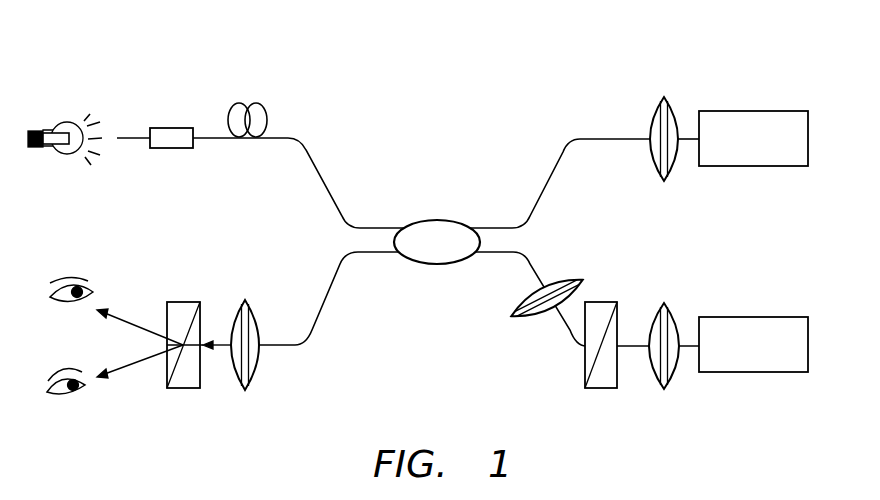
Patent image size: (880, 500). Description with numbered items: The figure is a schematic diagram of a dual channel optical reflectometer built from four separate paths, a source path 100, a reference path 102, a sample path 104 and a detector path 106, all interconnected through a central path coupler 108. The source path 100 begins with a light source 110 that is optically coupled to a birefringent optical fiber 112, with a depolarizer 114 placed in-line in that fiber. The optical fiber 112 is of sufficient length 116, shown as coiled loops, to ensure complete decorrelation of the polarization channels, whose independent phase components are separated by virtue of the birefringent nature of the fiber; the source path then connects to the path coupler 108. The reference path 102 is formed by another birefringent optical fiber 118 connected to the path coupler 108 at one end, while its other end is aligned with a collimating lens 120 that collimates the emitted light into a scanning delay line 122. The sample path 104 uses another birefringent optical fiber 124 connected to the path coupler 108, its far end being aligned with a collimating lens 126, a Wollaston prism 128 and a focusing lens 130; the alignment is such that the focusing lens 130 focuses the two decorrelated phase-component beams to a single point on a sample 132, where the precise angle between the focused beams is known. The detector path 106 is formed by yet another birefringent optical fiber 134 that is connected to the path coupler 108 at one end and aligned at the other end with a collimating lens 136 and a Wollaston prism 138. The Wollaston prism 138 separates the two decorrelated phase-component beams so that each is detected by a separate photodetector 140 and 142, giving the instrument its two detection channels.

The source path 100 is at (196, 66).
The reference path 102 is at (599, 102).
The sample path 104 is at (698, 276).
The detector path 106 is at (206, 282).
The path coupler 108 is at (437, 219).
The light source 110 is at (58, 124).
The birefringent optical fiber 112 is at (325, 186).
The depolarizer 114 is at (170, 127).
The length 116 is at (255, 104).
The birefringent optical fiber 118 is at (558, 190).
The collimating lens 120 is at (662, 96).
The scanning delay line 122 is at (758, 110).
The birefringent optical fiber 124 is at (522, 265).
The collimating lens 126 is at (528, 322).
The Wollaston prism 128 is at (600, 389).
The focusing lens 130 is at (664, 391).
The sample 132 is at (756, 373).
The birefringent optical fiber 134 is at (332, 300).
The collimating lens 136 is at (243, 391).
The Wollaston prism 138 is at (180, 390).
The photodetector 140 is at (60, 300).
The photodetector 142 is at (68, 398).